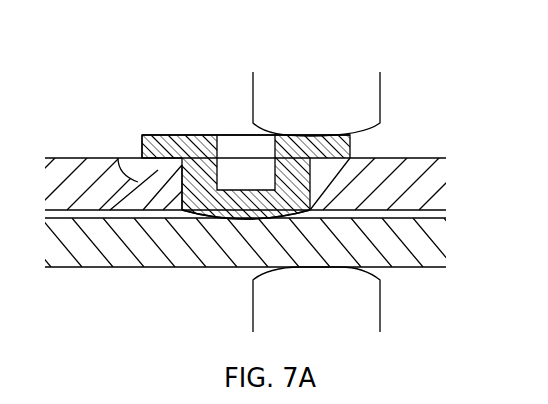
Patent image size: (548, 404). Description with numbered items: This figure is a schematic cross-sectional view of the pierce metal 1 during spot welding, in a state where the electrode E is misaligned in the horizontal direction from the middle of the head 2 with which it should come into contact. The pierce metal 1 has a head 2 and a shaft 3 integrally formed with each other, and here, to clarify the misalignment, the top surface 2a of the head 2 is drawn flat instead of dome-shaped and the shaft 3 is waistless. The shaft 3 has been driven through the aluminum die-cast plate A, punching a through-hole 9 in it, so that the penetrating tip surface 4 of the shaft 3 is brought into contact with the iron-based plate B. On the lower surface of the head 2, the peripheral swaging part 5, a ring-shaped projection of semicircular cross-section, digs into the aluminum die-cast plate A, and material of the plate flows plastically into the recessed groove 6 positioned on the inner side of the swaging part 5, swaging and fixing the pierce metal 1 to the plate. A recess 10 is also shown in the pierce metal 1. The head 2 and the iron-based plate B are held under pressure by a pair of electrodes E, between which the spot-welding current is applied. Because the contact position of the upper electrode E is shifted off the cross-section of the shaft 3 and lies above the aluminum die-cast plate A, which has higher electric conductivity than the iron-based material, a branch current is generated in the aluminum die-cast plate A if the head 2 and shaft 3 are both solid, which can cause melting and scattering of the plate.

The pierce metal 1 is at (141, 90).
The head 2 is at (140, 125).
The top surface 2a is at (178, 134).
The shaft 3 is at (153, 200).
The penetrating tip surface 4 is at (182, 212).
The swaging part 5 is at (118, 158).
The recessed groove 6 is at (182, 158).
The through-hole 9 is at (222, 217).
The recess 10 is at (247, 157).
The aluminum die-cast plate A is at (63, 157).
The iron-based plate B is at (62, 268).
The electrode E is at (381, 94).